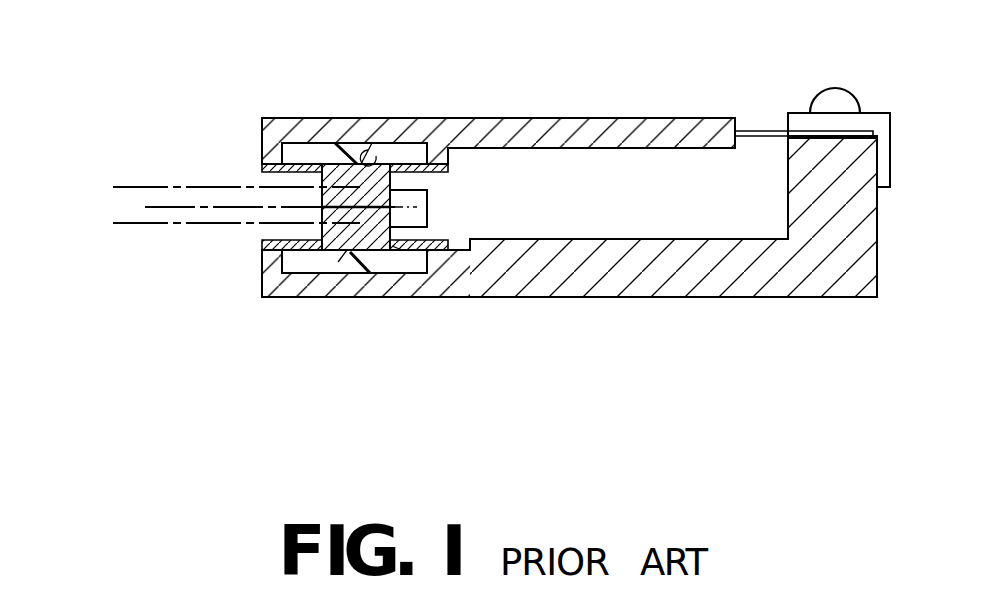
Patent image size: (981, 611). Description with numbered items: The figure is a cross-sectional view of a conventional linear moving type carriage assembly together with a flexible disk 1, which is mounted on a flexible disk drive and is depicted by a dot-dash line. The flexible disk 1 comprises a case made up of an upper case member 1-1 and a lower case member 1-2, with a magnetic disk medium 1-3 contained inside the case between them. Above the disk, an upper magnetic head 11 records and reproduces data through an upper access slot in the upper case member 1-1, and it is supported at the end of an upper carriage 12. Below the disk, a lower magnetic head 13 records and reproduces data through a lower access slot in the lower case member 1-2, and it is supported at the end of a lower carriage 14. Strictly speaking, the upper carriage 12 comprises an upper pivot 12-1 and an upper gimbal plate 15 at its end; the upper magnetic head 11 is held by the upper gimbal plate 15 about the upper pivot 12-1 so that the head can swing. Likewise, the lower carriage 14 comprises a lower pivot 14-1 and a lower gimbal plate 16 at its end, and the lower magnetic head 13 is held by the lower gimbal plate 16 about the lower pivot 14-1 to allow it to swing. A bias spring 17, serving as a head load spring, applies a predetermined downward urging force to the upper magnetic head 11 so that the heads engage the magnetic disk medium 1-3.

The flexible disk 1 is at (210, 195).
The upper case member 1-1 is at (163, 187).
The lower case member 1-2 is at (147, 225).
The magnetic disk medium 1-3 is at (160, 206).
The upper magnetic head 11 is at (322, 183).
The upper carriage 12 is at (612, 120).
The upper pivot 12-1 is at (362, 150).
The lower magnetic head 13 is at (322, 215).
The lower carriage 14 is at (768, 270).
The lower pivot 14-1 is at (340, 260).
The upper gimbal plate 15 is at (382, 150).
The lower gimbal plate 16 is at (398, 250).
The bias spring 17 is at (768, 130).